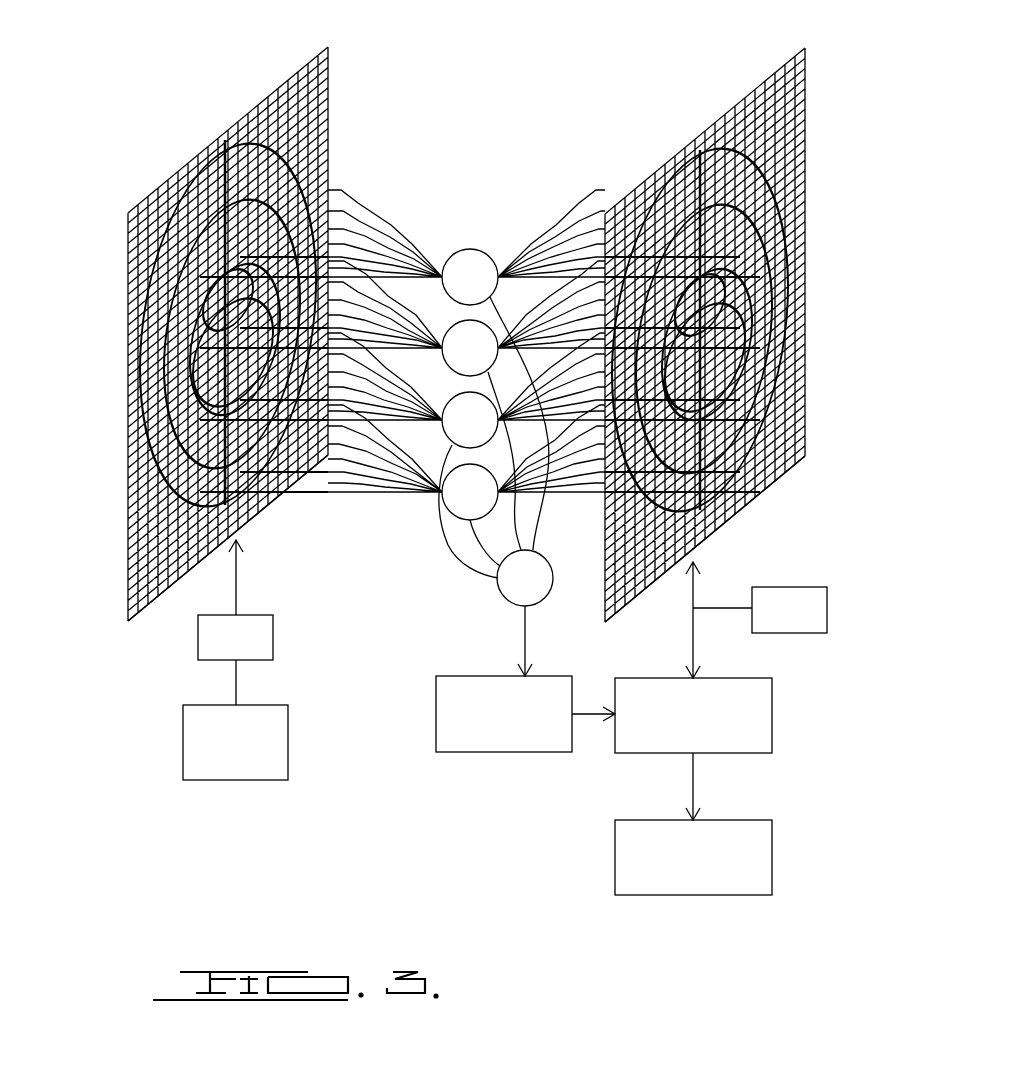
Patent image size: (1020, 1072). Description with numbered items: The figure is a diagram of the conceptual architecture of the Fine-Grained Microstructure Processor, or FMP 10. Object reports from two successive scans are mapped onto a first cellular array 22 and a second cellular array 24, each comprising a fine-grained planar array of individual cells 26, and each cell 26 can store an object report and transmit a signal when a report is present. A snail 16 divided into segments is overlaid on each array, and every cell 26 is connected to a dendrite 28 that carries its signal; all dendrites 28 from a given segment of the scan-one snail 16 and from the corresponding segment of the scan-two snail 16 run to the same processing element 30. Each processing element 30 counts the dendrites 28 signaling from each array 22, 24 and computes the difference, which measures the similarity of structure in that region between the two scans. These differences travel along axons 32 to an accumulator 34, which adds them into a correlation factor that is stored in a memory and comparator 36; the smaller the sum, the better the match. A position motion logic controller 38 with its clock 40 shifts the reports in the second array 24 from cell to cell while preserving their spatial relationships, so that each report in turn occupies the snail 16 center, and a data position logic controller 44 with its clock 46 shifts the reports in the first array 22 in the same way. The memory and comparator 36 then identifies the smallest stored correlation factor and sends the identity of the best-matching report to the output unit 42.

The FMP 10 is at (690, 51).
The snail 16 is at (235, 125).
The first cellular array 22 is at (117, 221).
The second cellular array 24 is at (818, 351).
The cell 26 is at (128, 612).
The dendrite 28 is at (400, 226).
The processing element 30 is at (483, 254).
The axon 32 is at (461, 570).
The accumulator 34 is at (540, 604).
The memory and comparator 36 is at (497, 752).
The position motion logic controller 38 is at (770, 752).
The clock 40 is at (820, 633).
The output unit 42 is at (772, 853).
The data position logic controller 44 is at (288, 733).
The clock 46 is at (273, 633).